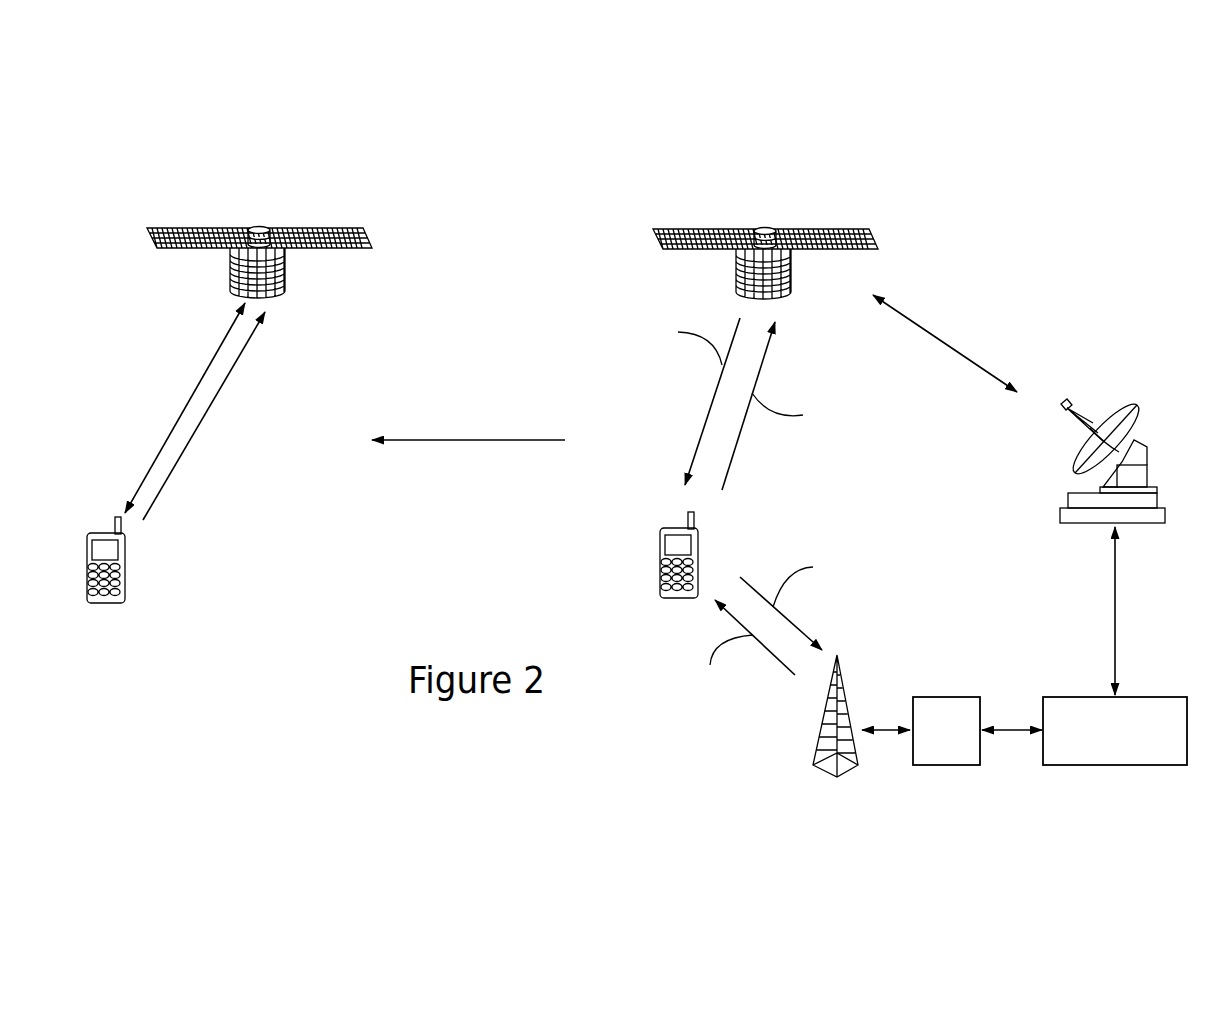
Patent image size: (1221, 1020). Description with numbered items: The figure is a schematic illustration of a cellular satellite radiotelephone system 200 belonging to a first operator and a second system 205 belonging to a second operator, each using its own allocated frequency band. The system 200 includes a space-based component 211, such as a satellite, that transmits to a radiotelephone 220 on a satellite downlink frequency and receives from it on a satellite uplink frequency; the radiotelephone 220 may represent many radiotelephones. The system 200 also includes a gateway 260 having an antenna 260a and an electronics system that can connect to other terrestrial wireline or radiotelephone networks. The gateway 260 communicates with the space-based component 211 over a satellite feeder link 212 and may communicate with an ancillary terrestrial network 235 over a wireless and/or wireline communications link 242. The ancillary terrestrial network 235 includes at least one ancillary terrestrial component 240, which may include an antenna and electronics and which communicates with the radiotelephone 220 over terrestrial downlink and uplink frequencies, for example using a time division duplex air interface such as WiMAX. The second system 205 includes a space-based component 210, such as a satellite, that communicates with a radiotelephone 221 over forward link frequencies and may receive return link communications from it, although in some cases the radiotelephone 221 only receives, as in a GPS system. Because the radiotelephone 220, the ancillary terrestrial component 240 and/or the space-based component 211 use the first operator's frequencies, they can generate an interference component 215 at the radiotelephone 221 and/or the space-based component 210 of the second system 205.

The cellular satellite radiotelephone system 200 is at (878, 172).
The second system 205 is at (388, 182).
The space-based component 210 is at (258, 230).
The space-based component 211 is at (763, 230).
The satellite feeder link 212 is at (950, 343).
The interference component 215 is at (485, 438).
The radiotelephone 220 is at (660, 568).
The radiotelephone 221 is at (125, 575).
The ancillary terrestrial network 235 is at (967, 743).
The ancillary terrestrial component 240 is at (850, 697).
The communications link 242 is at (1012, 727).
The gateway 260 is at (1134, 743).
The antenna 260a is at (1137, 433).